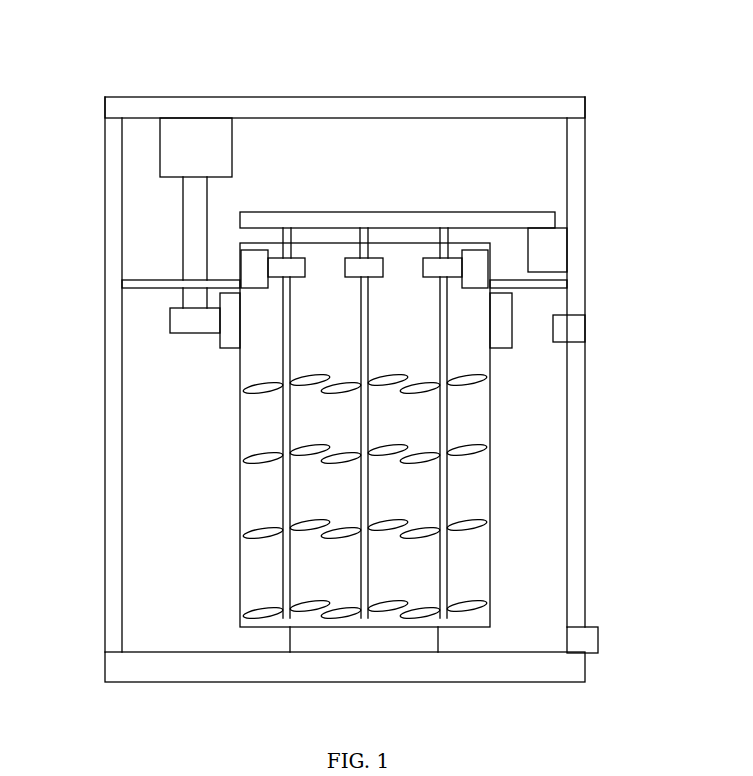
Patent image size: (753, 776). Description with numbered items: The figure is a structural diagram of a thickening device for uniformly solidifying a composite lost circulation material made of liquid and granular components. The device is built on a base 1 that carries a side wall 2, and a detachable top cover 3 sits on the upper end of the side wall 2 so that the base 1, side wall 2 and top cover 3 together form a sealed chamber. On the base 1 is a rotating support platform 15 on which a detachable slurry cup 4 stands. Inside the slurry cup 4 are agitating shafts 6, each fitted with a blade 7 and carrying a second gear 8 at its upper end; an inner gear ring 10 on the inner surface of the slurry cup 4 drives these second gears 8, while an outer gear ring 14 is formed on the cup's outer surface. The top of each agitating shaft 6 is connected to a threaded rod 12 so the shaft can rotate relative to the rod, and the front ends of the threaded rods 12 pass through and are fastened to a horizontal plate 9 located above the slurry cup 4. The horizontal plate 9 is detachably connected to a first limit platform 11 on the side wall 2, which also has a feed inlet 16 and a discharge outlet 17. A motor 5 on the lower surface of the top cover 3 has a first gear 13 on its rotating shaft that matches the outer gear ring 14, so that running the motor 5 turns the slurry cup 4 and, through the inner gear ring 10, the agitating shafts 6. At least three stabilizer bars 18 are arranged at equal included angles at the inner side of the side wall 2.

The base 1 is at (345, 689).
The side wall 2 is at (310, 374).
The top cover 3 is at (345, 75).
The slurry cup 4 is at (461, 435).
The motor 5 is at (176, 180).
The agitating shaft 6 is at (482, 447).
The blade 7 is at (326, 496).
The second gear 8 is at (365, 293).
The horizontal plate 9 is at (397, 188).
The inner gear ring 10 is at (502, 218).
The first limit platform 11 is at (600, 232).
The threaded rod 12 is at (365, 203).
The first gear 13 is at (130, 297).
The outer gear ring 14 is at (196, 342).
The rotating support platform 15 is at (356, 677).
The feed inlet 16 is at (617, 312).
The discharge outlet 17 is at (625, 622).
The stabilizer bar 18 is at (303, 238).